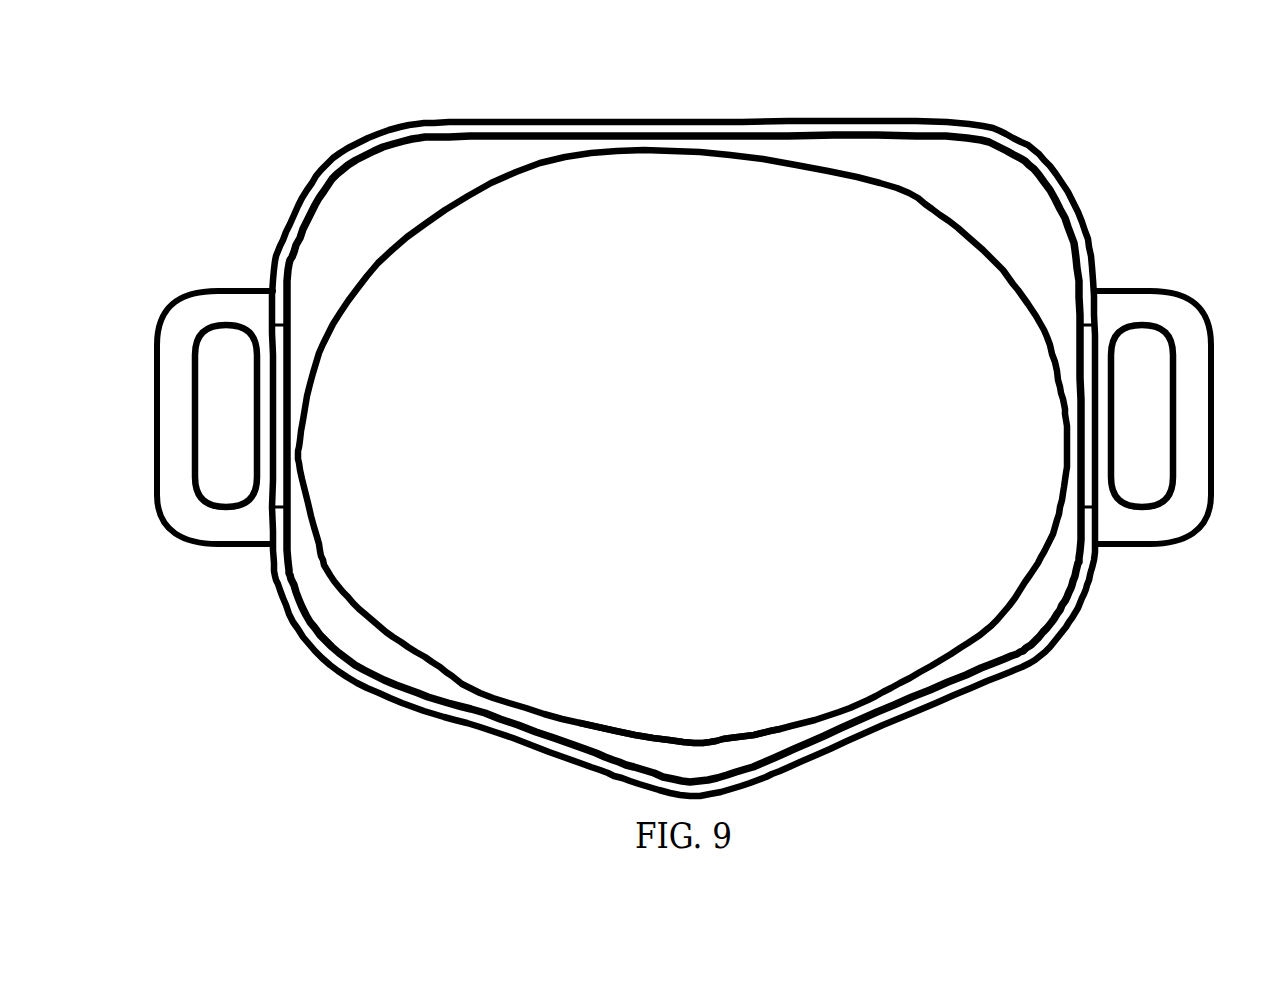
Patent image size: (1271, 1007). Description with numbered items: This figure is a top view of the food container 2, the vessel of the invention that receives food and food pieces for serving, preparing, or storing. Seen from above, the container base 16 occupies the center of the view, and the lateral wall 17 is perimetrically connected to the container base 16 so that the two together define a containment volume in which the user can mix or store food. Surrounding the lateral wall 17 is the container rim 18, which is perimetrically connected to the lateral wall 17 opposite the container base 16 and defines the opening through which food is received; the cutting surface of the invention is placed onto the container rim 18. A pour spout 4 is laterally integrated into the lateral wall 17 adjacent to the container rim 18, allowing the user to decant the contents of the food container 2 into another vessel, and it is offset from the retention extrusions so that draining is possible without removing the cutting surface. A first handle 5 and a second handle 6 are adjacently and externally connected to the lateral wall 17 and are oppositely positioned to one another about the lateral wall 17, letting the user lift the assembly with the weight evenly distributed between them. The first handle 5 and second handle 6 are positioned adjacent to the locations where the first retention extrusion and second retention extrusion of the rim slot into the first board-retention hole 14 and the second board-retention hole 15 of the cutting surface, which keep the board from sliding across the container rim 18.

The food container 2 is at (206, 590).
The pour spout 4 is at (685, 766).
The first handle 5 is at (232, 310).
The second handle 6 is at (1137, 310).
The first board-retention hole 14 is at (280, 420).
The second board-retention hole 15 is at (1090, 410).
The container base 16 is at (697, 472).
The lateral wall 17 is at (1014, 646).
The container rim 18 is at (990, 146).